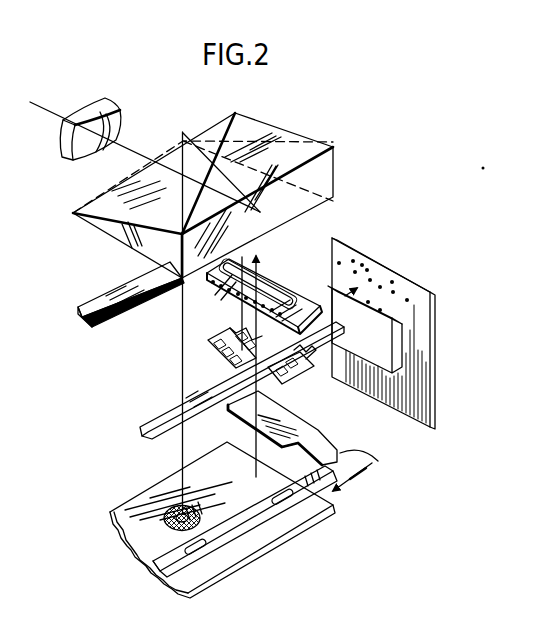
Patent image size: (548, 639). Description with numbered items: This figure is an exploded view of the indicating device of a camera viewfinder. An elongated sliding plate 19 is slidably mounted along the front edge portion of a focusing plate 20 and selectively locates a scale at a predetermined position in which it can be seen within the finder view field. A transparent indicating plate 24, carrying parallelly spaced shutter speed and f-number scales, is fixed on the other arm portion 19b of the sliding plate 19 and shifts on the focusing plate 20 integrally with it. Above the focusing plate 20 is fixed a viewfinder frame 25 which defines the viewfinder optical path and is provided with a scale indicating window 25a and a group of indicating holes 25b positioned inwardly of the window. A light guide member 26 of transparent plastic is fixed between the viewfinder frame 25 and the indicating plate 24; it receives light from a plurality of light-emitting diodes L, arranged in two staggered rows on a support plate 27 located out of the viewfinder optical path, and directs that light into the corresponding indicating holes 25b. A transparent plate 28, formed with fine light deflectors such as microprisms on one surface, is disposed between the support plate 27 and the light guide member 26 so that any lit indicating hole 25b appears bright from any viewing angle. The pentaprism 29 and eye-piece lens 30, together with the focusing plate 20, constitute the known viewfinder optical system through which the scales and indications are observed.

The sliding plate 19 is at (232, 527).
The other arm portion of sliding plate 19b is at (373, 468).
The focusing plate 20 is at (223, 528).
The indicating plate 24 is at (312, 422).
The viewfinder frame 25 is at (191, 283).
The scale indicating window 25a is at (265, 286).
The indicating holes 25b is at (221, 283).
The light guide member 26 is at (208, 334).
The support plate 27 is at (407, 329).
The transparent plate 28 is at (385, 372).
The pentaprism 29 is at (322, 178).
The eye-piece lens 30 is at (122, 116).
The light-emitting diodes L is at (401, 289).